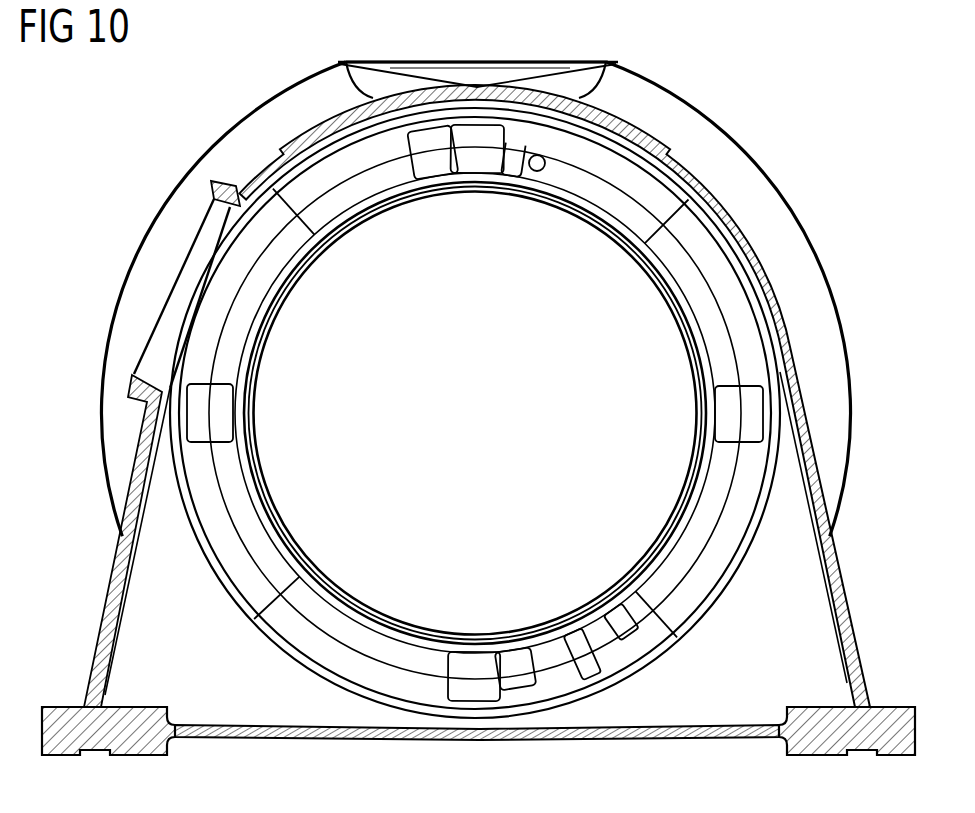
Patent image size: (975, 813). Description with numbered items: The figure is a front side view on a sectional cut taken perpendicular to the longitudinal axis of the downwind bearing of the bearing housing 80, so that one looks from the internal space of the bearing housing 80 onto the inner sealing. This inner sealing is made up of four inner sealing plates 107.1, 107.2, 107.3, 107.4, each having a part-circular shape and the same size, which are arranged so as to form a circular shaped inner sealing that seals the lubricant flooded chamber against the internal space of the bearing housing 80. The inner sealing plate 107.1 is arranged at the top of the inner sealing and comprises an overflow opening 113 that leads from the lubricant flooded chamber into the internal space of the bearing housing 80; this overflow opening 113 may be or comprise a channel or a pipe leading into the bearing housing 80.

The bearing housing 80 is at (810, 263).
The inner sealing plate 107.1 is at (477, 147).
The inner sealing plate 107.2 is at (730, 413).
The inner sealing plate 107.3 is at (470, 667).
The inner sealing plate 107.4 is at (222, 357).
The overflow opening 113 is at (539, 156).